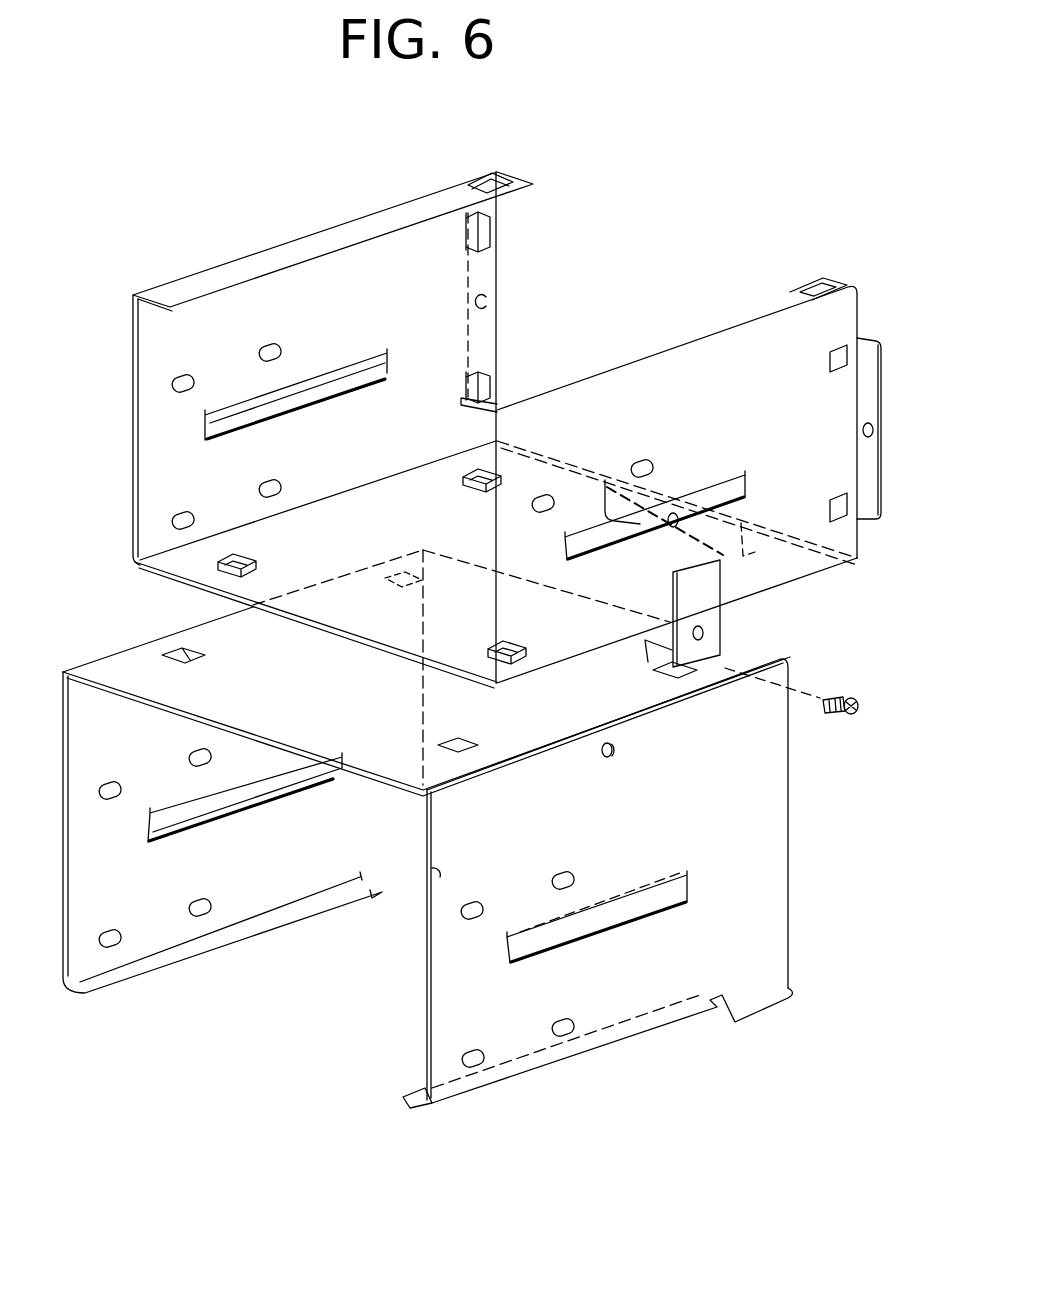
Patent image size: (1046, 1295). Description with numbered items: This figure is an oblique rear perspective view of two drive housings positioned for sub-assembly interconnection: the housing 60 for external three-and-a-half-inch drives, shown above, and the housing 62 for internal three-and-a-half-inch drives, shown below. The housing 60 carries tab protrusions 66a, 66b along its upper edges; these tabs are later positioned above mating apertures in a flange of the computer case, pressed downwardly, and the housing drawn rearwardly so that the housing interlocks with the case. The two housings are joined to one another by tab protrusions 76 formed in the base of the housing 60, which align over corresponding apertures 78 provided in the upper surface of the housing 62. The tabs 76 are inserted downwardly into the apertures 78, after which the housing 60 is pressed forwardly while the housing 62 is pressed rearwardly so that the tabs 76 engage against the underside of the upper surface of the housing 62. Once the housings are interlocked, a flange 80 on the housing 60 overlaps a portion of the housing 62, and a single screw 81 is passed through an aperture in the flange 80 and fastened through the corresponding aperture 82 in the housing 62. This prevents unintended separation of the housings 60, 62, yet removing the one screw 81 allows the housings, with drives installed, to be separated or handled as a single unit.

The housing 60 is at (735, 312).
The housing 62 is at (773, 820).
The tab protrusion 66a is at (505, 182).
The tab protrusion 66b is at (840, 283).
The tab protrusion 76 is at (476, 470).
The aperture 78 is at (190, 662).
The flange 80 is at (720, 628).
The screw 81 is at (860, 702).
The aperture 82 is at (603, 750).